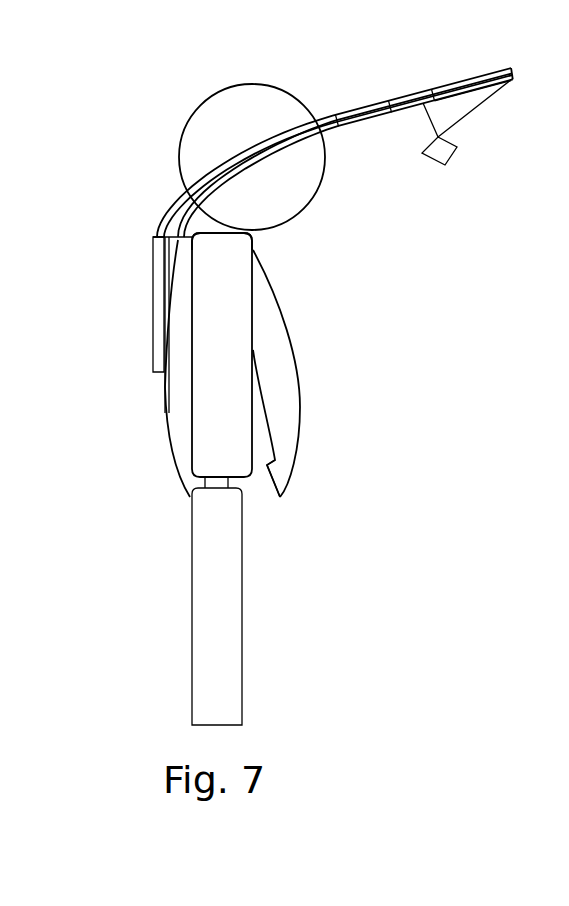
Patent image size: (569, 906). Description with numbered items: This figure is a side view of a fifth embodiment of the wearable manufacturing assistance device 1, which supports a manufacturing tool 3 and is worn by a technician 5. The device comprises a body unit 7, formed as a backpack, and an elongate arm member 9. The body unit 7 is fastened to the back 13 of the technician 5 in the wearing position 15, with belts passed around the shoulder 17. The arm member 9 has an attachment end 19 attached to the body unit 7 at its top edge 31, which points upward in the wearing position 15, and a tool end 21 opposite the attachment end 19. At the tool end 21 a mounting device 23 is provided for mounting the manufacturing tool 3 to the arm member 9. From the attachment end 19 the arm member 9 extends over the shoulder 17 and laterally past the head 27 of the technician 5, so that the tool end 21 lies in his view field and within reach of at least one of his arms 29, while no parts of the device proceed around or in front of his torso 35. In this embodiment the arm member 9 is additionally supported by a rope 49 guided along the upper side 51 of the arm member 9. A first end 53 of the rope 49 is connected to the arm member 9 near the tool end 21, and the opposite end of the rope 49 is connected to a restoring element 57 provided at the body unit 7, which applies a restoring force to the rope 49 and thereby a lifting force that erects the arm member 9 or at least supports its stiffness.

The manufacturing assistance device 1 is at (80, 236).
The manufacturing tool 3 is at (452, 157).
The technician 5 is at (235, 300).
The body unit 7 is at (172, 268).
The arm member 9 is at (335, 118).
The back 13 is at (192, 327).
The wearing position 15 is at (128, 200).
The shoulder 17 is at (237, 245).
The attachment end 19 is at (190, 218).
The tool end 21 is at (503, 72).
The mounting device 23 is at (432, 92).
The head 27 is at (252, 136).
The arm 29 is at (277, 397).
The top edge 31 is at (180, 236).
The torso 35 is at (228, 417).
The rope 49 is at (172, 208).
The upper side 51 is at (388, 102).
The first end 53 is at (483, 80).
The restoring element 57 is at (152, 319).